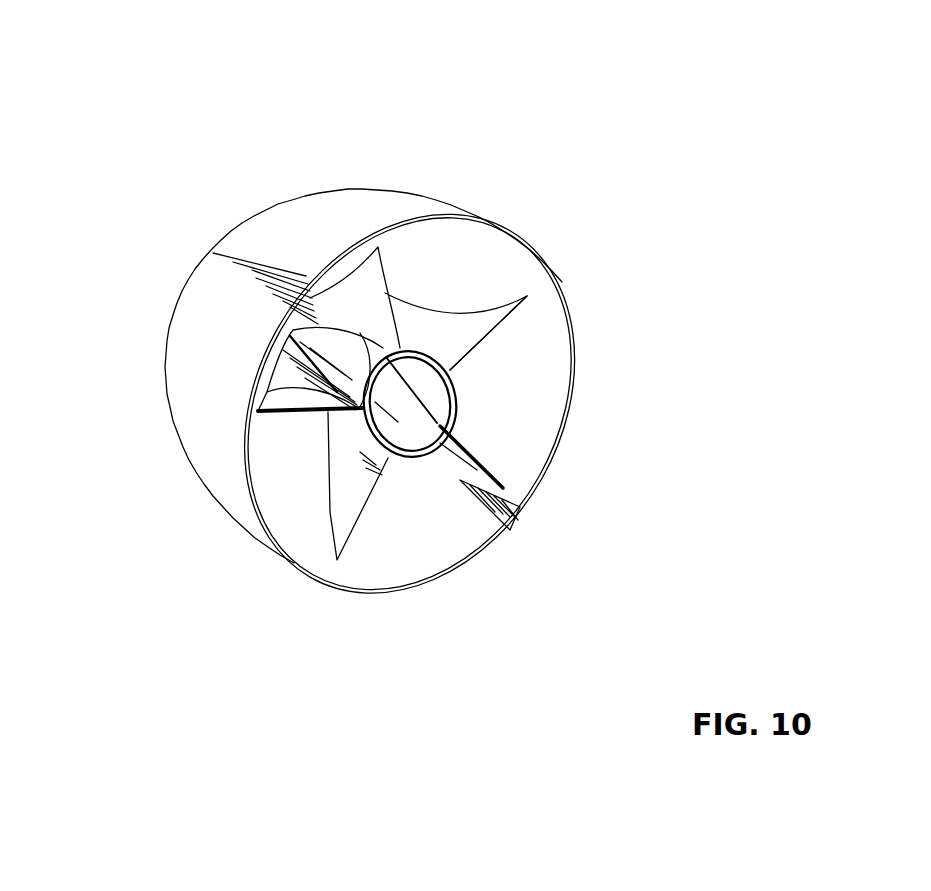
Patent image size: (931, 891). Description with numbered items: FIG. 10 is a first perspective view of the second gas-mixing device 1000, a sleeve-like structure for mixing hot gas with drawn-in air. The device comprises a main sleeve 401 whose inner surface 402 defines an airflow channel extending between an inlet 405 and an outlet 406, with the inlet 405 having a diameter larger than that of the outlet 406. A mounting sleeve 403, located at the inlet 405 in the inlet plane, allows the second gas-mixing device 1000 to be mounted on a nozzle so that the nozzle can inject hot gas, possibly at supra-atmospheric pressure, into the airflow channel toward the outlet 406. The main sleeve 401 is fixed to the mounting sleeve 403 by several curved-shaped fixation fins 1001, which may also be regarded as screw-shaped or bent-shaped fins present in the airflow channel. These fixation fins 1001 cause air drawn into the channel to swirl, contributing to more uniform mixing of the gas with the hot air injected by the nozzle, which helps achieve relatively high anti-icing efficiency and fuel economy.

The second gas-mixing device 1000 is at (570, 44).
The fixation fins 1001 is at (470, 320).
The main sleeve 401 is at (200, 430).
The inner surface 402 is at (530, 319).
The mounting sleeve 403 is at (440, 422).
The inlet 405 is at (604, 421).
The outlet 406 is at (176, 235).